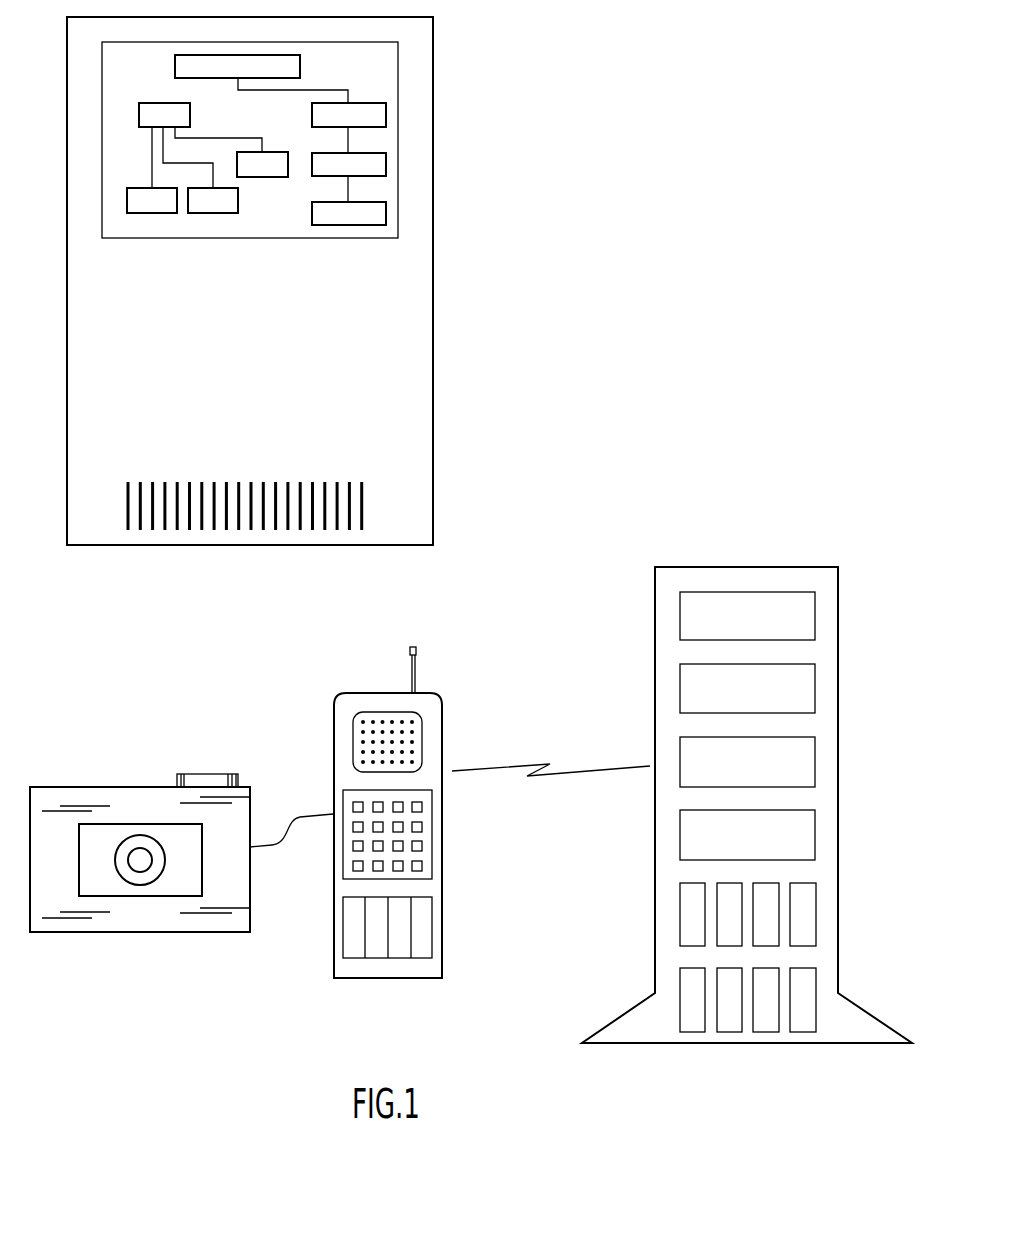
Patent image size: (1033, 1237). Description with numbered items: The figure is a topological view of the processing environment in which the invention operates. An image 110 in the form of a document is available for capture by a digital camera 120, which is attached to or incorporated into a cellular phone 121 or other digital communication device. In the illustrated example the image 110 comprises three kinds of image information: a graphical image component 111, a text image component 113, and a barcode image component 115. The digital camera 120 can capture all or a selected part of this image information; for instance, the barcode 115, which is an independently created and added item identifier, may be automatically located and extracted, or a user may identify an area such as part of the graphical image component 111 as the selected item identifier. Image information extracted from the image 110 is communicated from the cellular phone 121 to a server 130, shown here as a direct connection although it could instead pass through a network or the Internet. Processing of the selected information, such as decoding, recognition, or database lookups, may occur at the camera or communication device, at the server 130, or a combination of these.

The image 110 is at (433, 72).
The graphical image component 111 is at (388, 140).
The text image component 113 is at (400, 327).
The barcode image component 115 is at (367, 505).
The digital camera 120 is at (107, 787).
The cellular phone 121 is at (334, 737).
The server 130 is at (655, 603).